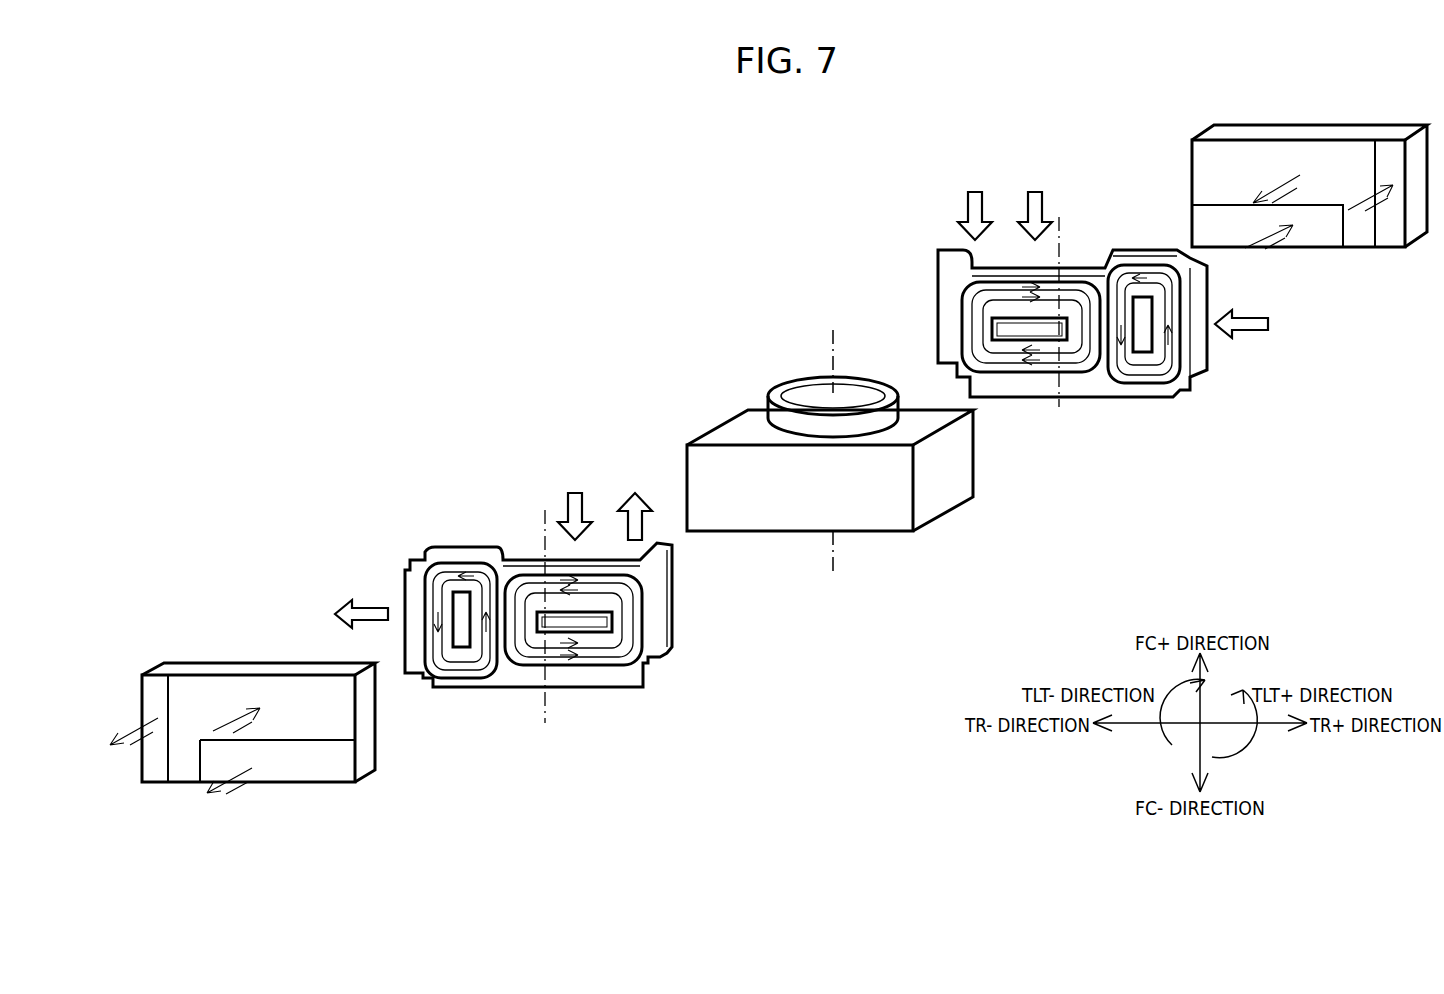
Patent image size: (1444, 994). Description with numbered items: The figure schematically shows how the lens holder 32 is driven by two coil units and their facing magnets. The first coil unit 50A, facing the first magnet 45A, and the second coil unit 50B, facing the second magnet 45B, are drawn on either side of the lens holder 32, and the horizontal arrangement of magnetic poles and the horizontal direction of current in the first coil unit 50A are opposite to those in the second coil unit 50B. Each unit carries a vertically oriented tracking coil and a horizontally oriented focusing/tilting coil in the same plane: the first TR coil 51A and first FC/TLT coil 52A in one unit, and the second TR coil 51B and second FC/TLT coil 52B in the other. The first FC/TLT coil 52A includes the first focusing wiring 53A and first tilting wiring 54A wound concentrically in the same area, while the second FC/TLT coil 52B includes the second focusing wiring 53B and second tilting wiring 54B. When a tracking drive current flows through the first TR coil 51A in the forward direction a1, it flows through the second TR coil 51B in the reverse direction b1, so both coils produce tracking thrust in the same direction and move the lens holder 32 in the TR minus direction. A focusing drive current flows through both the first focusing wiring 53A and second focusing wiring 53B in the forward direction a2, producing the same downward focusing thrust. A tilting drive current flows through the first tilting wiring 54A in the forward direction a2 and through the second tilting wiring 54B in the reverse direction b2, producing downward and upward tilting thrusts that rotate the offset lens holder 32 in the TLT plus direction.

The lens holder 32 is at (740, 425).
The first magnet 45A is at (1390, 248).
The second magnet 45B is at (262, 785).
The first coil unit 50A is at (938, 252).
The second coil unit 50B is at (440, 690).
The first TR coil 51A is at (1168, 353).
The second TR coil 51B is at (428, 578).
The first FC/TLT coil 52A is at (960, 313).
The second FC/TLT coil 52B is at (610, 667).
The first focusing wiring 53A is at (1068, 360).
The second focusing wiring 53B is at (620, 640).
The first tilting wiring 54A is at (1047, 360).
The second tilting wiring 54B is at (625, 613).
The forward direction a1 is at (1168, 292).
The forward direction a2 is at (1066, 300).
The reverse direction b1 is at (452, 572).
The reverse direction b2 is at (523, 583).